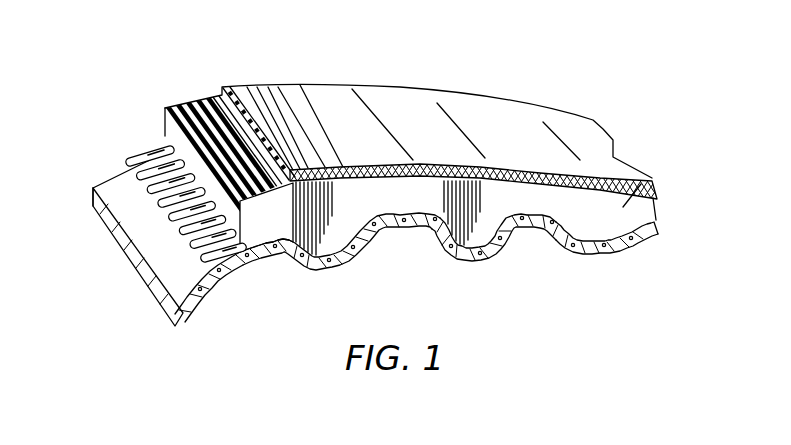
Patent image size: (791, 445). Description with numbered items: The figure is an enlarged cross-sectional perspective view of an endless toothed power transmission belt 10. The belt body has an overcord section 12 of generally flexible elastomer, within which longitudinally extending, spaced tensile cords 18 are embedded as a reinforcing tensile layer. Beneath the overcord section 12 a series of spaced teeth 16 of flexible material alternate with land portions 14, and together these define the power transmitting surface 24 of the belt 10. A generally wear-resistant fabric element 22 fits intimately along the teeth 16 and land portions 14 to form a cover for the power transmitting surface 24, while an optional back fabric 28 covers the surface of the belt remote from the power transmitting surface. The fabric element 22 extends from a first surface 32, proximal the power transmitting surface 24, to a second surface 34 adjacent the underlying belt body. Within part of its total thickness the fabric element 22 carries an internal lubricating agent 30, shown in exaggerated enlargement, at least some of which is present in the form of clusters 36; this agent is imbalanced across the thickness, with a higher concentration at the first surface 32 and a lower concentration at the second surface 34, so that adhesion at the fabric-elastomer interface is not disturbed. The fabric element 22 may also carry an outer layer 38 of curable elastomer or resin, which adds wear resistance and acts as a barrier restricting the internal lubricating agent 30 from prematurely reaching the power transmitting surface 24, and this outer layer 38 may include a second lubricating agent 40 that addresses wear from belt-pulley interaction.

The endless toothed power transmission belt 10 is at (168, 88).
The overcord section 12 is at (643, 182).
The land portions 14 is at (380, 290).
The teeth 16 is at (328, 232).
The tensile cords 18 is at (200, 187).
The fabric element 22 is at (210, 275).
The power transmitting surface 24 is at (535, 232).
The back fabric 28 is at (413, 108).
The internal lubricating agent 30 is at (483, 248).
The first surface 32 is at (592, 247).
The second surface 34 is at (654, 212).
The cluster 36 is at (140, 268).
The outer layer 38 is at (97, 214).
The second lubricating agent 40 is at (398, 230).